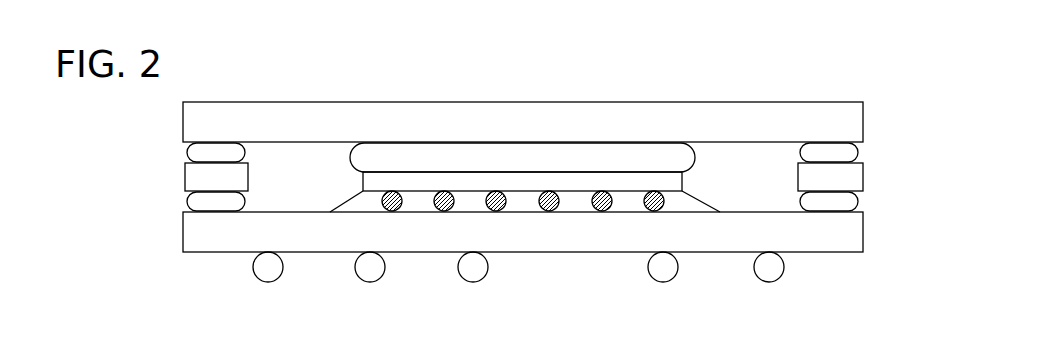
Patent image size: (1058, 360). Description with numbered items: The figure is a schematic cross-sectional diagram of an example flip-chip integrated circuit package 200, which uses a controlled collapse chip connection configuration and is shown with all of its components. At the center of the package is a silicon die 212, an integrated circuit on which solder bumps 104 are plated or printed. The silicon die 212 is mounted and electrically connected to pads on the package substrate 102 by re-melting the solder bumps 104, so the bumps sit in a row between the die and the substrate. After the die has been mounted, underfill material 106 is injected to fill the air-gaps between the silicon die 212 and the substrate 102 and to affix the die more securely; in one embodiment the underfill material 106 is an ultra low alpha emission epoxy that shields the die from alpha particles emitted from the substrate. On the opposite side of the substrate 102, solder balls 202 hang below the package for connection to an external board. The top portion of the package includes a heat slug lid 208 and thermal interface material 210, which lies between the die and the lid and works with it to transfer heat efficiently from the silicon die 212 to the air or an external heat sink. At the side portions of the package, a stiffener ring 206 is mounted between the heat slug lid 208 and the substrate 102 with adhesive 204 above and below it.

The flip-chip integrated circuit package 200 is at (853, 70).
The package substrate 102 is at (540, 245).
The solder bumps 104 is at (607, 205).
The underfill material 106 is at (575, 205).
The solder balls 202 is at (267, 281).
The adhesive 204 is at (188, 152).
The stiffener ring 206 is at (185, 178).
The heat slug lid 208 is at (540, 133).
The thermal interface material 210 is at (358, 155).
The silicon die 212 is at (667, 182).